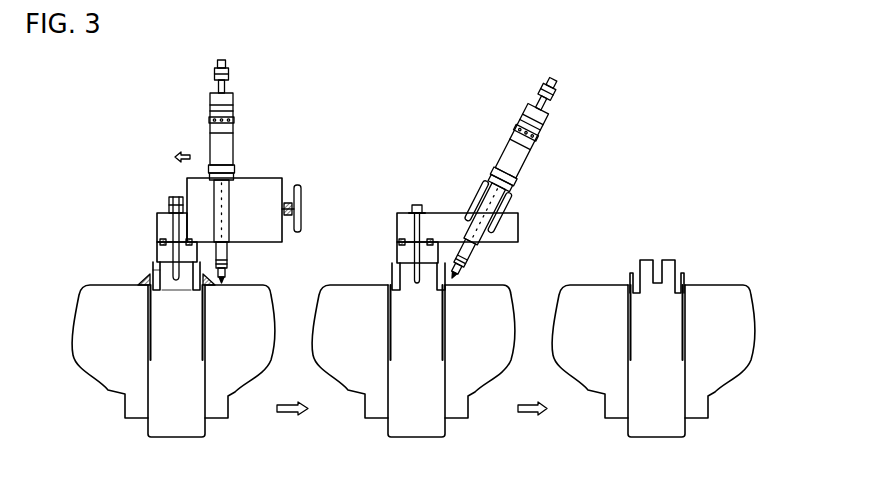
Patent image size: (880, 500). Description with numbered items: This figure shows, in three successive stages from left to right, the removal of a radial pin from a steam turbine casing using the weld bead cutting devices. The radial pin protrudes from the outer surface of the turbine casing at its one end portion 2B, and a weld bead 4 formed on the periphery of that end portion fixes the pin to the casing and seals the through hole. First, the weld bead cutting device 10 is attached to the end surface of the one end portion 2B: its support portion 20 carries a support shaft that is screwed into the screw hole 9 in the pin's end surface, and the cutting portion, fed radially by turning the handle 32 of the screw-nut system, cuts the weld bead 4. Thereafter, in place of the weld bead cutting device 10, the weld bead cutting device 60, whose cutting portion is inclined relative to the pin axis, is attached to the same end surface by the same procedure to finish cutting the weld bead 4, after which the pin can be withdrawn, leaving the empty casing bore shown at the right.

The one end portion 2B is at (152, 268).
The weld bead 4 is at (148, 279).
The screw hole 9 is at (172, 290).
The weld bead cutting device 10 is at (191, 93).
The support portion 20 is at (155, 186).
The handle 32 is at (294, 186).
The weld bead cutting device 60 is at (437, 141).